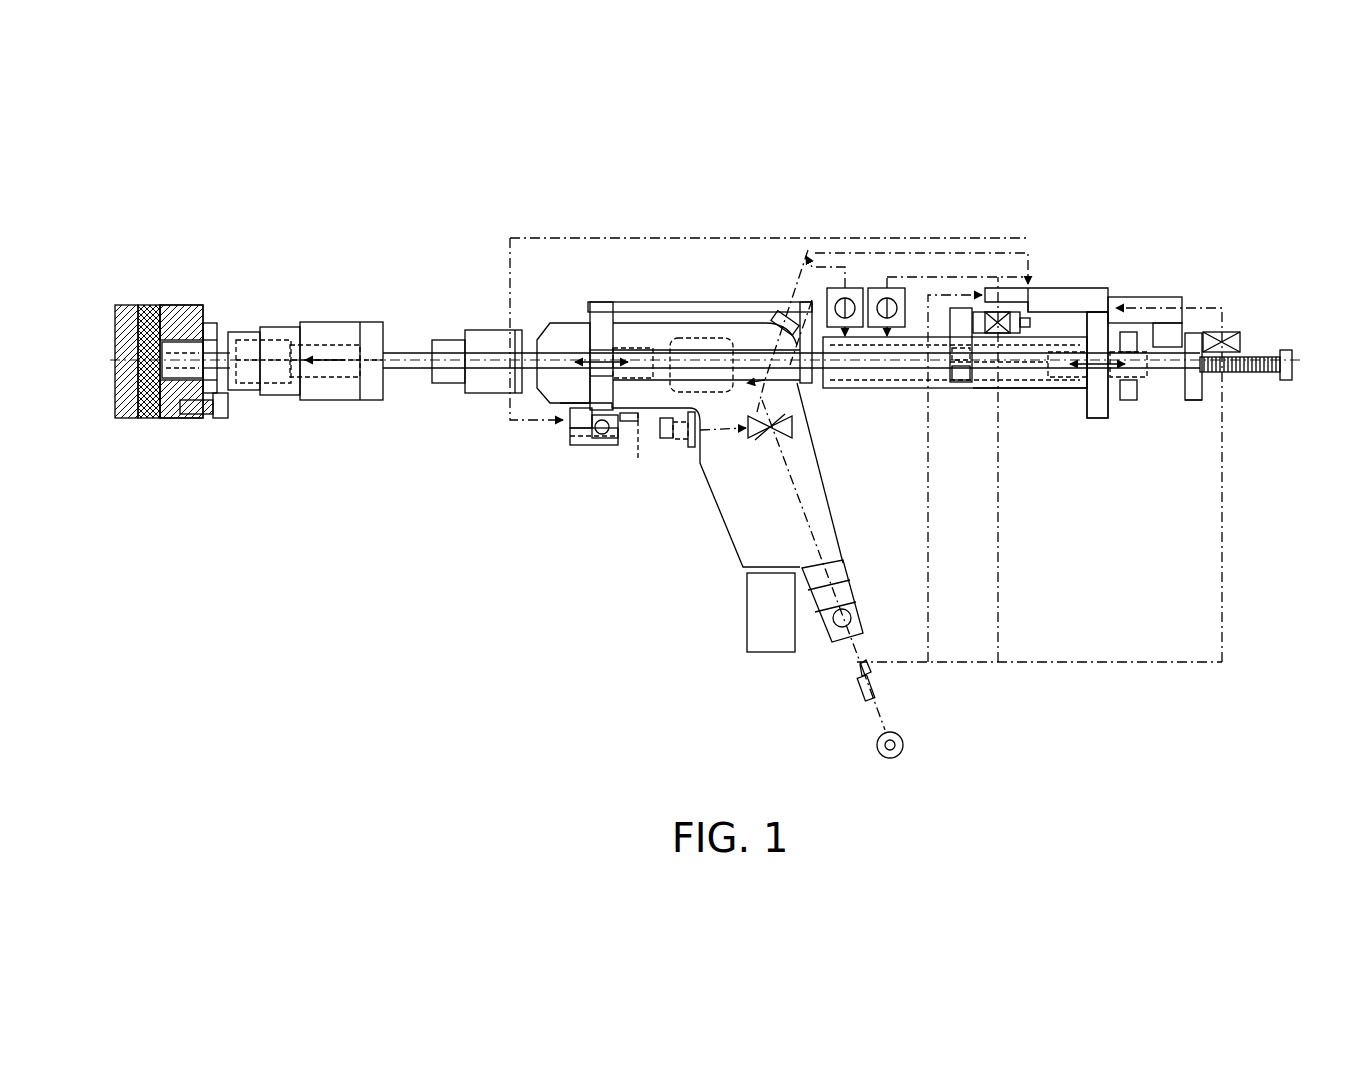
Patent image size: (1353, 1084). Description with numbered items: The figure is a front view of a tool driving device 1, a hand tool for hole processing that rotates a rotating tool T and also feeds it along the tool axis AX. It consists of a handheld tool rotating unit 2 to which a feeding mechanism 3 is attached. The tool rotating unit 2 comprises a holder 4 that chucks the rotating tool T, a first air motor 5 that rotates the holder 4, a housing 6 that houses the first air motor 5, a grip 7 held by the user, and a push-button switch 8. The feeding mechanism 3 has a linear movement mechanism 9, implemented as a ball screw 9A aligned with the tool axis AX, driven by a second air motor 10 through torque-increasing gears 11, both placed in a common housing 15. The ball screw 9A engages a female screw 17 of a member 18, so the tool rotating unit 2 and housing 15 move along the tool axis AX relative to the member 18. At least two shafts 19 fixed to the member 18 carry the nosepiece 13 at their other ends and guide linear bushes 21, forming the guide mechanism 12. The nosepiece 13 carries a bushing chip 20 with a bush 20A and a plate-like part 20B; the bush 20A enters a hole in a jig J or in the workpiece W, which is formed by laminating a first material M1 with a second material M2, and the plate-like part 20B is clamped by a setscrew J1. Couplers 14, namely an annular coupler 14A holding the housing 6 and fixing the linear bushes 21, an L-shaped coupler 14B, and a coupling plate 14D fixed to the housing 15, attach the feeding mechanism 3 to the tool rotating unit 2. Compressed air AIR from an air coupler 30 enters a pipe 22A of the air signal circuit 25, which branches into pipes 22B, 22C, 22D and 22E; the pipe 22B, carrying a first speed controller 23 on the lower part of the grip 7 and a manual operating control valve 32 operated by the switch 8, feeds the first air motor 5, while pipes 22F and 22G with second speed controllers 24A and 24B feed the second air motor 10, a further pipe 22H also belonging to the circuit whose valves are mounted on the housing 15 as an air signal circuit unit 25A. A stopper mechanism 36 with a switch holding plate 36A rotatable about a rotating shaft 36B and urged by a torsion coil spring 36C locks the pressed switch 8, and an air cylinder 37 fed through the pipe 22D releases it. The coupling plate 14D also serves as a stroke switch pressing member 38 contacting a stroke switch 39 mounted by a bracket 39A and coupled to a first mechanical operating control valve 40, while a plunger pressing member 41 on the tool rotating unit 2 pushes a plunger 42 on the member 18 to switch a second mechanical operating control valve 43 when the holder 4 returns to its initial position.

The tool driving device 1 is at (470, 208).
The tool rotating unit 2 is at (711, 534).
The feeding mechanism 3 is at (1070, 392).
The holder 4 is at (488, 330).
The first air motor 5 is at (690, 318).
The housing 6 is at (565, 323).
The grip 7 is at (737, 503).
The switch 8 is at (668, 440).
The linear movement mechanism 9 is at (1246, 367).
The ball screw 9A is at (1247, 357).
The second air motor 10 is at (955, 396).
The gears 11 is at (963, 385).
The guide mechanism 12 is at (791, 421).
The nosepiece 13 is at (705, 356).
The couplers 14 is at (844, 343).
The annular coupler 14A is at (600, 322).
The L-shaped coupler 14B is at (708, 302).
The coupling plate 14D is at (1097, 418).
The housing 15 is at (915, 390).
The female screw 17 is at (1183, 396).
The member 18 is at (1195, 403).
The shafts 19 is at (497, 375).
The bushing chip 20 is at (198, 308).
The bush 20A is at (168, 305).
The plate-like part 20B is at (228, 318).
The linear bushes 21 is at (540, 372).
The pipe 22A is at (874, 695).
The pipe 22B is at (843, 535).
The pipe 22C is at (927, 487).
The pipe 22D is at (1000, 575).
The pipe 22E is at (1222, 550).
The pipe 22F is at (800, 238).
The pipe 22G is at (965, 236).
The air passage branch 22H is at (797, 272).
The first speed controller 23 is at (812, 627).
The second speed controller 24A is at (845, 288).
The second speed controller 24B is at (880, 288).
The air signal circuit 25 is at (1057, 247).
The air signal circuit unit 25A is at (1082, 300).
The air coupler 30 is at (905, 745).
The manual operating control valve 32 is at (790, 420).
The stopper mechanism 36 is at (599, 511).
The switch holding plate 36A is at (650, 490).
The rotating shaft 36B is at (597, 448).
The torsion coil spring 36C is at (607, 447).
The air cylinder 37 is at (575, 440).
The stroke switch pressing member 38 is at (1095, 337).
The stroke switch 39 is at (1017, 350).
The bracket 39A is at (957, 448).
The first mechanical operating control valve 40 is at (1010, 334).
The plunger pressing member 41 is at (1165, 318).
The plunger 42 is at (1172, 335).
The second mechanical operating control valve 43 is at (1222, 332).
The tool axis AX is at (342, 390).
The rotating tool T is at (294, 408).
The workpiece W is at (162, 414).
The first material M1 is at (128, 418).
The second material M2 is at (171, 392).
The jig J is at (216, 418).
The setscrew J1 is at (225, 418).
The compressed air AIR is at (850, 695).